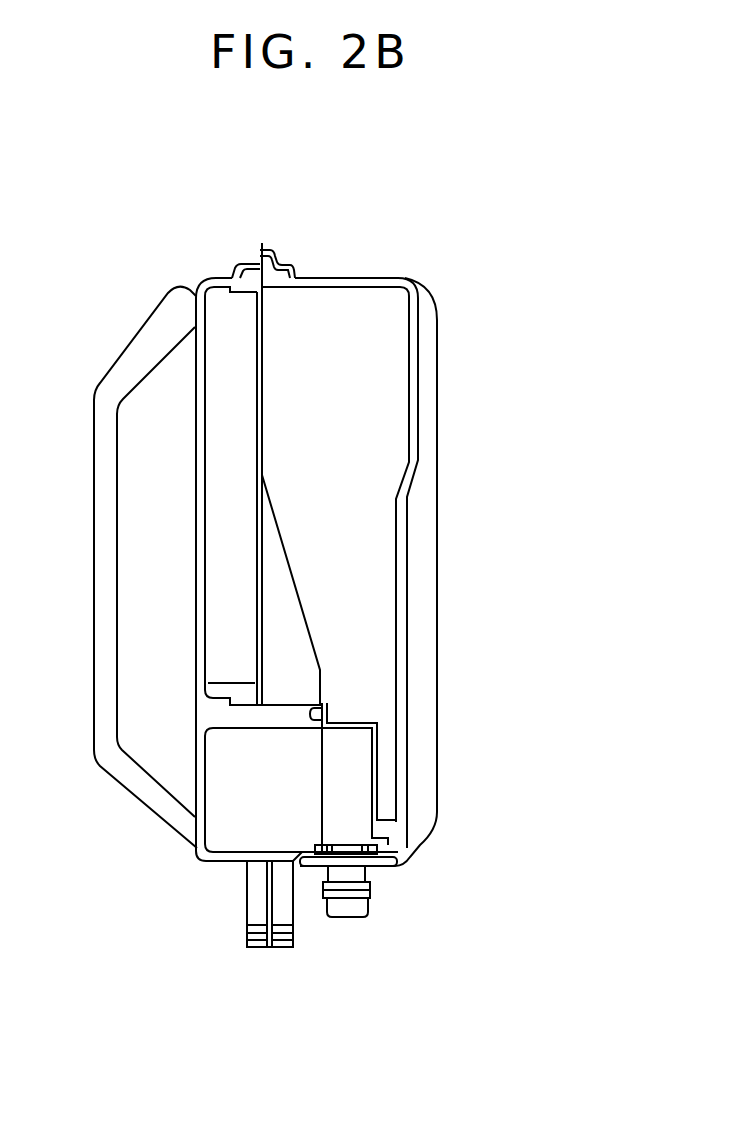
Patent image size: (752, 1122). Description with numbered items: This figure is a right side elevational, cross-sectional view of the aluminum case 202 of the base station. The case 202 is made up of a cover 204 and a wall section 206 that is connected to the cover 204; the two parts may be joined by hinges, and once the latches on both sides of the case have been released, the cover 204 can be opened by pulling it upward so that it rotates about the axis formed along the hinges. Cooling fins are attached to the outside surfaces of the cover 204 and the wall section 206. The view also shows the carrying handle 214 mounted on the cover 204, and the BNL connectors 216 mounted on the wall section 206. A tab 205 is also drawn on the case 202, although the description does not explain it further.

The case 202 is at (355, 263).
The cover 204 is at (150, 303).
The mounting tab 205 is at (254, 283).
The wall section 206 is at (440, 413).
The carrying handle 214 is at (252, 897).
The BNL connectors 216 is at (372, 903).